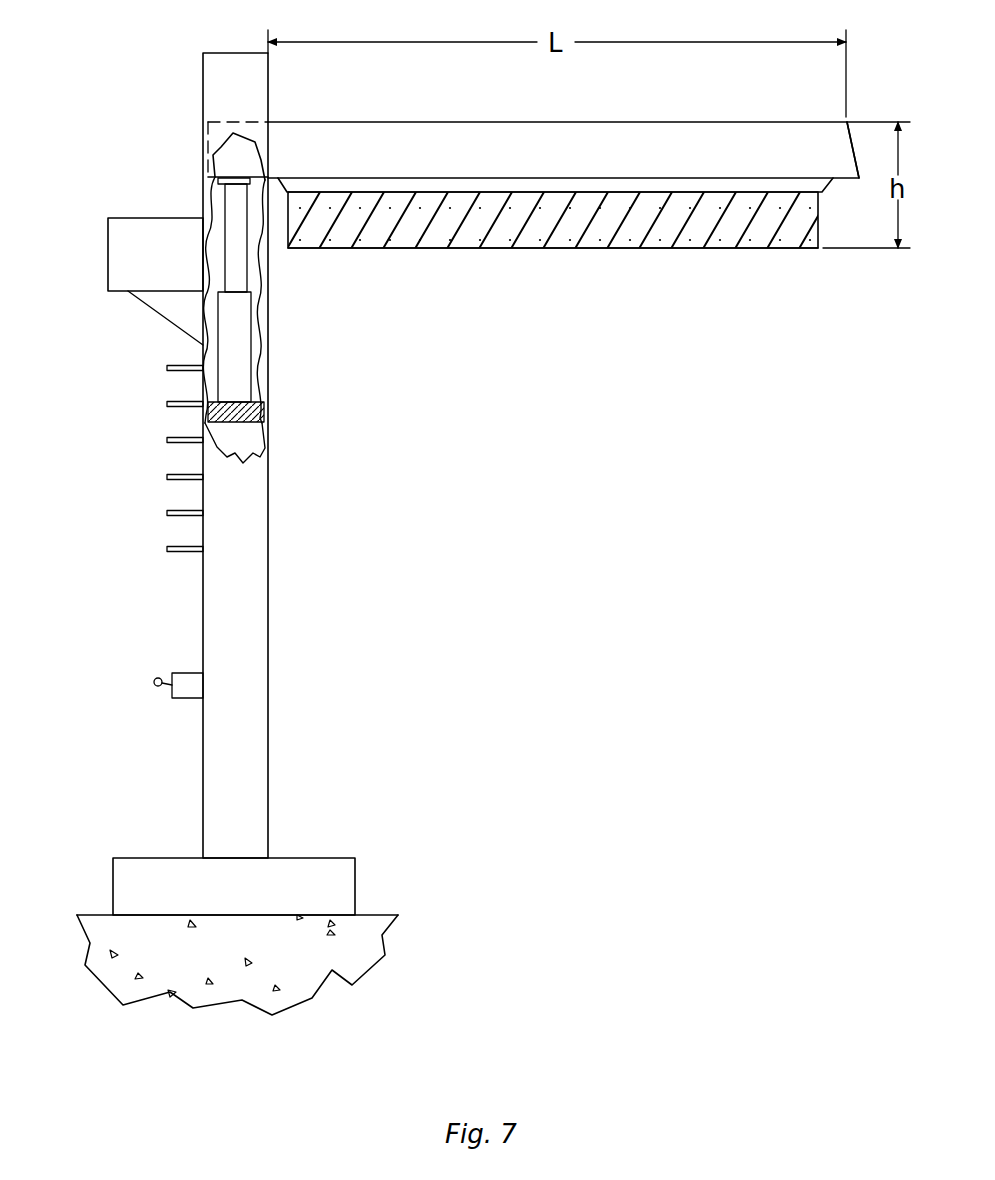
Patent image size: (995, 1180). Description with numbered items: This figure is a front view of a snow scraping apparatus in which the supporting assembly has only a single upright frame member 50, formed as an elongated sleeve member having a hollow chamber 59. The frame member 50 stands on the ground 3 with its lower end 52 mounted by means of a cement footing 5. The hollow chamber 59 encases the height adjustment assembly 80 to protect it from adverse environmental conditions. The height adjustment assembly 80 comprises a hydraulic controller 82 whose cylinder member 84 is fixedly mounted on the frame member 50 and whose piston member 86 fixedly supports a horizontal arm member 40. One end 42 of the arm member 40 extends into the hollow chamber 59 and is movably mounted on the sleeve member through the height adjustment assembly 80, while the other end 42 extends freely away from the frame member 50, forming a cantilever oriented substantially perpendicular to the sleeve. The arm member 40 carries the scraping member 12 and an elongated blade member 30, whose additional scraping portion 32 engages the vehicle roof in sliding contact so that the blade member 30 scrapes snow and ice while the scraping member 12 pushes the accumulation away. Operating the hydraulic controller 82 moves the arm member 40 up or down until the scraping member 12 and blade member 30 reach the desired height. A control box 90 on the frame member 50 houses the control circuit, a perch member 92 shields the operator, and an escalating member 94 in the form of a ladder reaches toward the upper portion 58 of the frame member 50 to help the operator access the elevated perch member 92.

The ground 3 is at (358, 933).
The cement footing 5 is at (160, 870).
The scraping member 12 is at (830, 187).
The blade member 30 is at (492, 222).
The additional scraping portion 32 is at (640, 248).
The horizontal arm member 40 is at (583, 165).
The arm member end 42 is at (233, 152).
The upright frame member 50 is at (300, 553).
The lower end 52 is at (243, 847).
The upper portion 58 is at (208, 220).
The hollow chamber 59 is at (260, 283).
The height adjustment assembly 80 is at (211, 283).
The hydraulic controller 82 is at (240, 363).
The cylinder member 84 is at (252, 385).
The piston member 86 is at (247, 243).
The control box 90 is at (182, 688).
The perch member 92 is at (143, 266).
The escalating member 94 is at (177, 447).